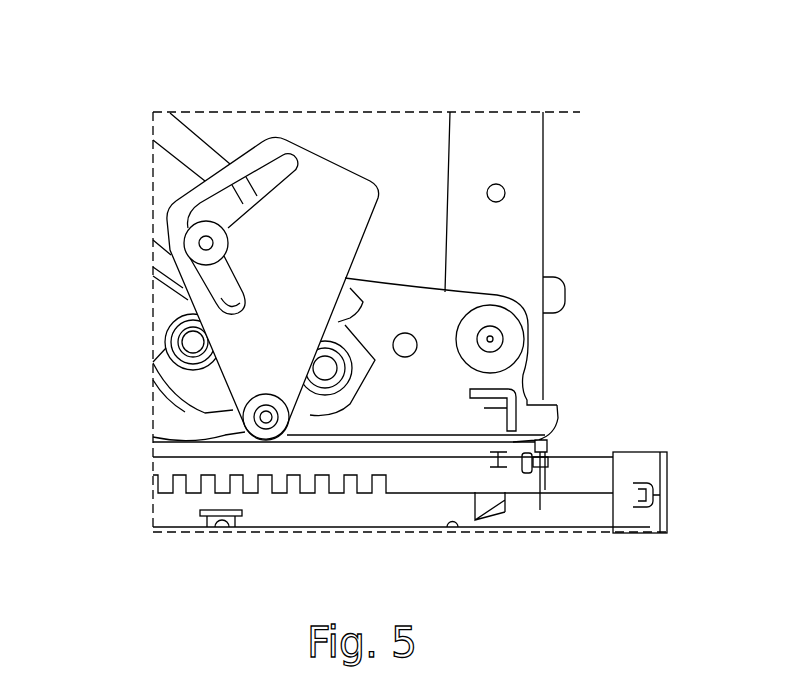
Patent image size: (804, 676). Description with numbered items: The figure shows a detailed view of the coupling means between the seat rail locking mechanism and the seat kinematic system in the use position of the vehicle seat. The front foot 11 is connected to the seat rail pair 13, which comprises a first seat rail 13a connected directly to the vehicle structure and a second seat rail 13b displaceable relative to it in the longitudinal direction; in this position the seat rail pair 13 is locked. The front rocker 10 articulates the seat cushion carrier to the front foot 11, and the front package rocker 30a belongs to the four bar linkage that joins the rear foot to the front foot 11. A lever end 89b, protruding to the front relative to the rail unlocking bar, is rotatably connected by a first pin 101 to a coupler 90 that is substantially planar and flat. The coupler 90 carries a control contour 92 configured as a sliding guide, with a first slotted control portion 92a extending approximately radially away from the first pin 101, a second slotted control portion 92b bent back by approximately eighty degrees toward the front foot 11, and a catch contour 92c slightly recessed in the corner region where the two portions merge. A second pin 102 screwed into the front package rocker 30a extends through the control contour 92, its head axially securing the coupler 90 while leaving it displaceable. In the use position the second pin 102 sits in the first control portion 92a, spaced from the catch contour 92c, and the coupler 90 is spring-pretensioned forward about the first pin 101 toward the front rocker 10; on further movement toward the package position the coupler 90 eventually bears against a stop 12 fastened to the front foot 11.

The front rocker 10 is at (487, 143).
The front foot 11 is at (533, 427).
The stop 12 is at (508, 392).
The seat rail pair 13 is at (407, 542).
The first seat rail 13a is at (565, 512).
The second seat rail 13b is at (175, 450).
The front package rocker 30a is at (192, 125).
The lever end 89b is at (175, 425).
The coupler 90 is at (318, 182).
The control contour 92 is at (185, 292).
The first slotted control portion 92a is at (215, 275).
The second slotted control portion 92b is at (238, 193).
The catch contour 92c is at (183, 203).
The first pin 101 is at (272, 433).
The second pin 102 is at (188, 238).